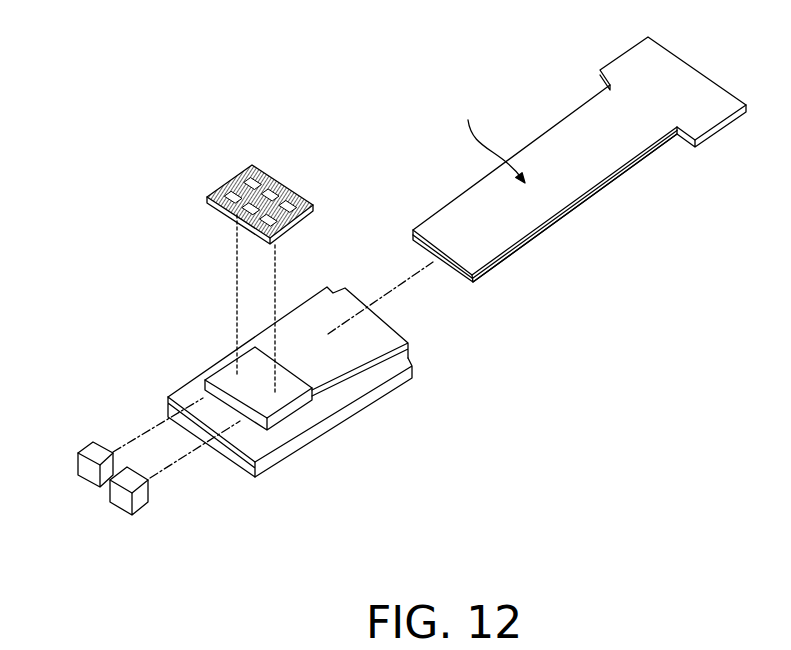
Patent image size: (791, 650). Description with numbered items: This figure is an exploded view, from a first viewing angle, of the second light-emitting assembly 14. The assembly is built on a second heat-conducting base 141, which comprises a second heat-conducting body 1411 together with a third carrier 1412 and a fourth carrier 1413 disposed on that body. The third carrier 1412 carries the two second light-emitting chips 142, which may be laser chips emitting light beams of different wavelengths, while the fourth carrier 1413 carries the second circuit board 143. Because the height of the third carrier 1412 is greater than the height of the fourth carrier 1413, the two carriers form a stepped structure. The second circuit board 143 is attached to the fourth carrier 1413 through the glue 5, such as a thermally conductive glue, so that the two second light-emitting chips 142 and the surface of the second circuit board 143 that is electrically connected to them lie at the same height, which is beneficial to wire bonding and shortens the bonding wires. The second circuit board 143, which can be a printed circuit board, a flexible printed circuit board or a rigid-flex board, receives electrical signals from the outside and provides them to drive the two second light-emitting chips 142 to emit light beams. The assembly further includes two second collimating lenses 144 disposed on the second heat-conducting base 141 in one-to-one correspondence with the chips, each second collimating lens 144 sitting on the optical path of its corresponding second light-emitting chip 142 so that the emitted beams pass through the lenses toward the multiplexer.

The second light-emitting assembly 14 is at (57, 35).
The second heat-conducting base 141 is at (375, 523).
The second heat-conducting body 1411 is at (412, 372).
The third carrier 1412 is at (278, 417).
The fourth carrier 1413 is at (348, 355).
The second light-emitting chip 142 is at (251, 165).
The second circuit board 143 is at (603, 124).
The second collimating lens 144 is at (86, 441).
The glue 5 is at (529, 243).